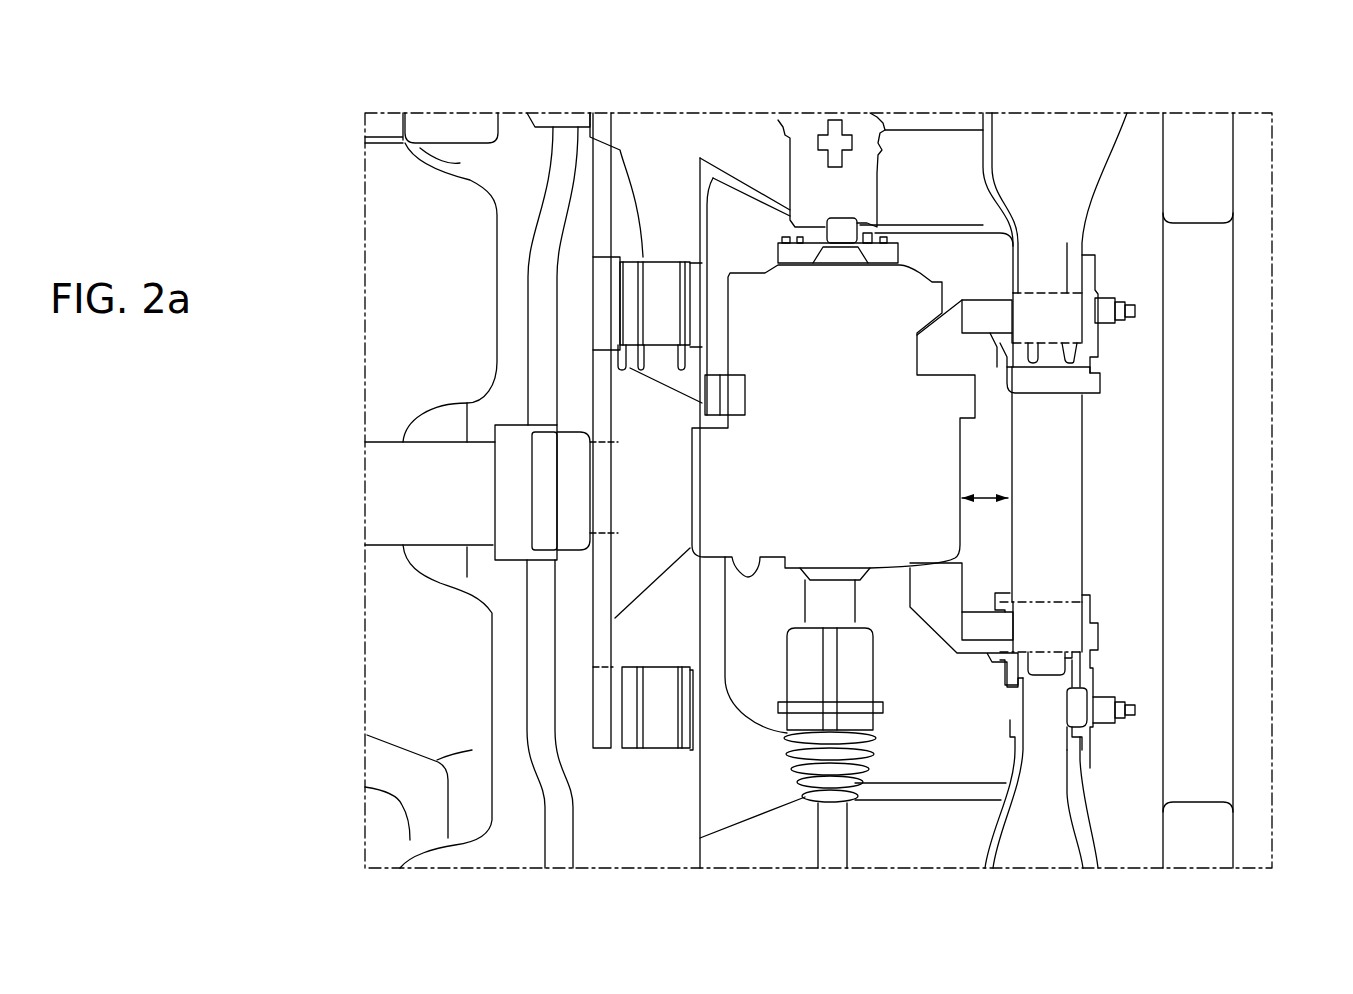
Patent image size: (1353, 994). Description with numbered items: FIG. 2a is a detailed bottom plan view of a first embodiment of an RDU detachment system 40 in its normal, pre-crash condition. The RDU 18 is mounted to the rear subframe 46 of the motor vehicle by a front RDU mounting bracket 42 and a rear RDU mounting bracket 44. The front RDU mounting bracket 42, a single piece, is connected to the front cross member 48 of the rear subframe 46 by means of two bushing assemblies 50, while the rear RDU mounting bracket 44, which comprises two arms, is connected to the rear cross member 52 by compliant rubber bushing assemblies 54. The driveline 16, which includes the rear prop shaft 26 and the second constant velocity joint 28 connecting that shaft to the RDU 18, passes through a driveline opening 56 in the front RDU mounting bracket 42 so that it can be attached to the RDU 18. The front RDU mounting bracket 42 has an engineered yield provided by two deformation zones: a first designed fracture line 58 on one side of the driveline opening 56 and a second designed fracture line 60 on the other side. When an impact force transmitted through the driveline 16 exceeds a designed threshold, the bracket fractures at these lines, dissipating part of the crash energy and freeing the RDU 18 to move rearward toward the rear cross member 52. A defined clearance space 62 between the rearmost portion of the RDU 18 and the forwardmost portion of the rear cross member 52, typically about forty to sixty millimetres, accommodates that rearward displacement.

The driveline 16 is at (320, 455).
The RDU 18 is at (780, 517).
The rear prop shaft 26 is at (388, 497).
The second constant velocity joint 28 is at (542, 442).
The RDU detachment system 40 is at (350, 690).
The front RDU mounting bracket 42 is at (600, 608).
The rear RDU mounting bracket 44 is at (945, 363).
The rear subframe 46 is at (1076, 102).
The front cross member 48 is at (635, 237).
The bushing assemblies 50 is at (686, 255).
The rear cross member 52 is at (1080, 228).
The bushing assemblies 54 is at (1092, 280).
The driveline opening 56 is at (600, 437).
The first designed fracture line 58 is at (611, 113).
The second designed fracture line 60 is at (603, 667).
The clearance space 62 is at (1008, 500).